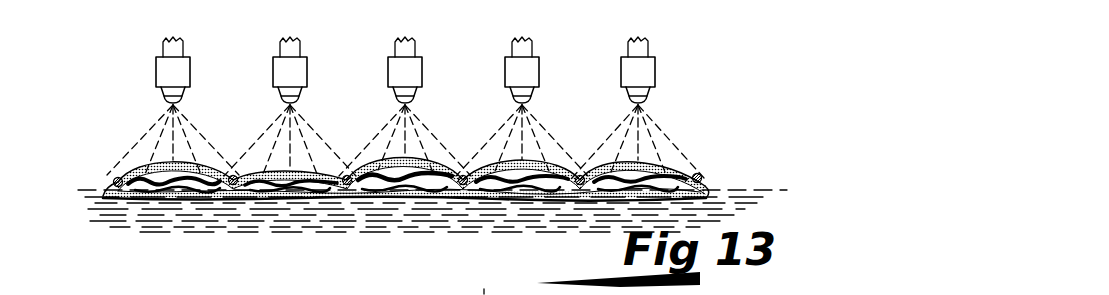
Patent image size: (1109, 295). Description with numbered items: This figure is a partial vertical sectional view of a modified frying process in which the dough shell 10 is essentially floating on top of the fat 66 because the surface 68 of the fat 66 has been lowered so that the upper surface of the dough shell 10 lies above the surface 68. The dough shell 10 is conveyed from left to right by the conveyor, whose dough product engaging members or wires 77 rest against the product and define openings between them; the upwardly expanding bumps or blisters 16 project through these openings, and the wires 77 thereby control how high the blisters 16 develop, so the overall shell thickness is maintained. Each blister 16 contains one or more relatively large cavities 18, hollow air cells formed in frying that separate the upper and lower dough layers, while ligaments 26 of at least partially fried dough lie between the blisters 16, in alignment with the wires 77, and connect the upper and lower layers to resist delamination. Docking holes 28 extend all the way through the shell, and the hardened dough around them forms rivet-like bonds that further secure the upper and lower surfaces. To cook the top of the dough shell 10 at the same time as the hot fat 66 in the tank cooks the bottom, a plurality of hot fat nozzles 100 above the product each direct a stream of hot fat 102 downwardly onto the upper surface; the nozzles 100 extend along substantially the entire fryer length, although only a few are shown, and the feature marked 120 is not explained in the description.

The dough shell 10 is at (176, 226).
The blisters 16 is at (280, 165).
The cavities 18 is at (160, 190).
The ligaments 26 is at (226, 198).
The docking holes 28 is at (289, 198).
The fat 66 is at (760, 199).
The surface of the fat 68 is at (768, 190).
The wires 77 is at (116, 178).
The hot fat nozzles 100 is at (277, 42).
The stream of hot fat 102 is at (272, 113).
The section indicator 120 is at (485, 280).